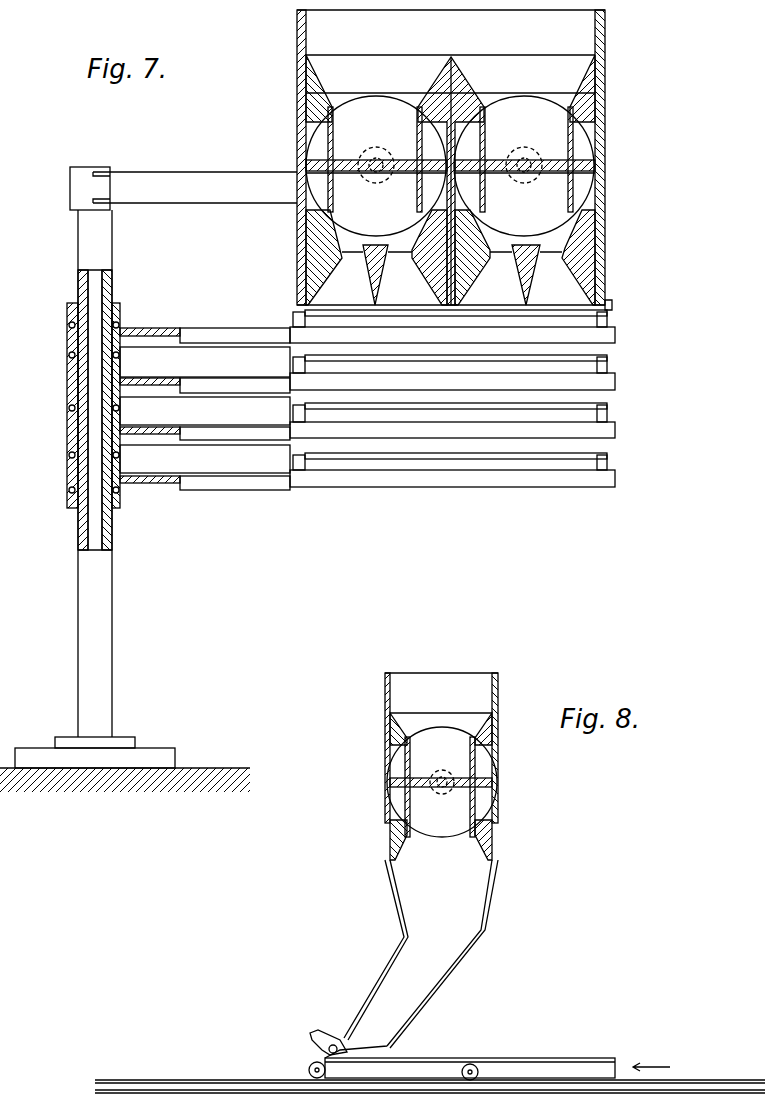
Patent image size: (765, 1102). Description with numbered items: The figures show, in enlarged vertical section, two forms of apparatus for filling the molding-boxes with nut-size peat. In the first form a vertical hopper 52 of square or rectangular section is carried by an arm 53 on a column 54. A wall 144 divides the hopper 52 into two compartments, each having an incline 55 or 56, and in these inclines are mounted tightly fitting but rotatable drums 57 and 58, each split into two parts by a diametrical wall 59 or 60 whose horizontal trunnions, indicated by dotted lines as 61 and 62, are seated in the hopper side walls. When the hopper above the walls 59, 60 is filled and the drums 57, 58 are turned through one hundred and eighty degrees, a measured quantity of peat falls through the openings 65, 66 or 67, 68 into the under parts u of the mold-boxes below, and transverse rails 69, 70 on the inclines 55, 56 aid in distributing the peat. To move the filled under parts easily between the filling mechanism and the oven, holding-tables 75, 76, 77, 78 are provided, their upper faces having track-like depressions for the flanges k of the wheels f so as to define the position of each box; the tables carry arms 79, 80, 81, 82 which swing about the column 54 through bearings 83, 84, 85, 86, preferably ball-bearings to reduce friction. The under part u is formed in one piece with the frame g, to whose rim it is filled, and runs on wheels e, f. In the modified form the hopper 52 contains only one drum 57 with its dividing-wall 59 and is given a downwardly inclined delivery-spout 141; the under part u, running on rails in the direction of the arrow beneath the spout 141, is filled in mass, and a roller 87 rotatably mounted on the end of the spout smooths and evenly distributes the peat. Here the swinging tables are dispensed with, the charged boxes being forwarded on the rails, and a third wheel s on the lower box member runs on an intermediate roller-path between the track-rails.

In FIG. 7, the hopper 52 is at (298, 36).
In FIG. 8, the hopper 52 is at (496, 680).
In FIG. 7, the wall 144 is at (451, 57).
In FIG. 7, the incline 55 is at (318, 90).
In FIG. 7, the incline 56 is at (468, 90).
In FIG. 7, the drum 57 is at (330, 130).
In FIG. 8, the drum 57 is at (405, 760).
In FIG. 7, the drum 58 is at (478, 130).
In FIG. 7, the diametrical wall 59 is at (350, 174).
In FIG. 8, the diametrical wall 59 is at (442, 790).
In FIG. 7, the diametrical wall 60 is at (550, 174).
In FIG. 7, the roller shaft 61 is at (376, 174).
In FIG. 7, the roller shaft 62 is at (522, 174).
In FIG. 7, the opening 65 is at (328, 282).
In FIG. 7, the opening 66 is at (400, 282).
In FIG. 7, the opening 67 is at (479, 282).
In FIG. 7, the opening 68 is at (549, 282).
In FIG. 7, the transverse rail 69 is at (386, 268).
In FIG. 7, the transverse rail 70 is at (534, 280).
In FIG. 7, the arm 53 is at (190, 200).
In FIG. 7, the column 54 is at (105, 613).
In FIG. 7, the bearing 86 is at (122, 325).
In FIG. 7, the bearing 85 is at (122, 376).
In FIG. 7, the bearing 84 is at (122, 425).
In FIG. 7, the bearing 83 is at (122, 474).
In FIG. 7, the arm 82 is at (220, 334).
In FIG. 7, the arm 81 is at (222, 384).
In FIG. 7, the arm 80 is at (233, 433).
In FIG. 7, the arm 79 is at (235, 481).
In FIG. 7, the holding-table 78 is at (452, 331).
In FIG. 7, the holding-table 77 is at (452, 375).
In FIG. 7, the holding-table 76 is at (452, 423).
In FIG. 7, the holding-table 75 is at (452, 473).
In FIG. 7, the under part u is at (394, 392).
In FIG. 8, the under part u is at (430, 1075).
In FIG. 7, the frame g is at (293, 306).
In FIG. 7, the wheel e is at (293, 411).
In FIG. 8, the wheel e is at (470, 1063).
In FIG. 7, the flange k is at (607, 411).
In FIG. 7, the wheel f is at (607, 462).
In FIG. 8, the spout 141 is at (470, 950).
In FIG. 8, the roller 87 is at (312, 1044).
In FIG. 8, the third wheel s is at (308, 1071).